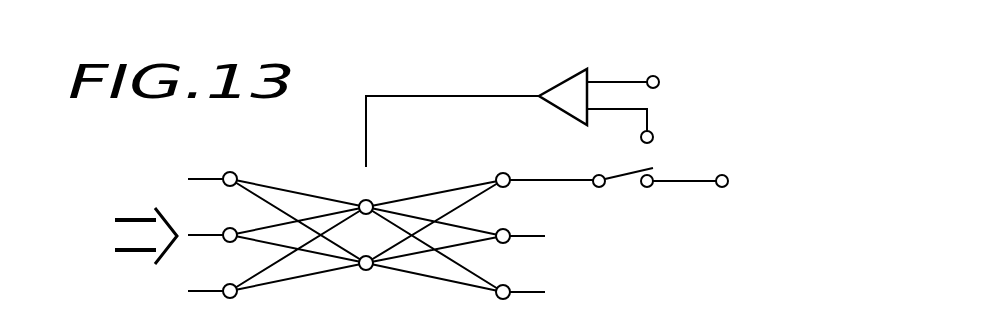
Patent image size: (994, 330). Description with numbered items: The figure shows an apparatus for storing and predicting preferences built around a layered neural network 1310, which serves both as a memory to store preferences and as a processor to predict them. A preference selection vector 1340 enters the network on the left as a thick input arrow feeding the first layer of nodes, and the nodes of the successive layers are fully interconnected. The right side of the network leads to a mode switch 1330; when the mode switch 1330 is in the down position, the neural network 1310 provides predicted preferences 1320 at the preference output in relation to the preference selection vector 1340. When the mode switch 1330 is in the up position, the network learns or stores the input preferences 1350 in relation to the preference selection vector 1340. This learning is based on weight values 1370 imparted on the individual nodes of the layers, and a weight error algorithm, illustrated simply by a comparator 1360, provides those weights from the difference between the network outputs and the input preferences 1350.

The layered neural network 1310 is at (364, 282).
The predicted preferences 1320 is at (722, 187).
The mode switch 1330 is at (630, 168).
The preference selection vector 1340 is at (131, 219).
The input preferences 1350 is at (647, 78).
The comparator 1360 is at (557, 107).
The weight values 1370 is at (389, 167).